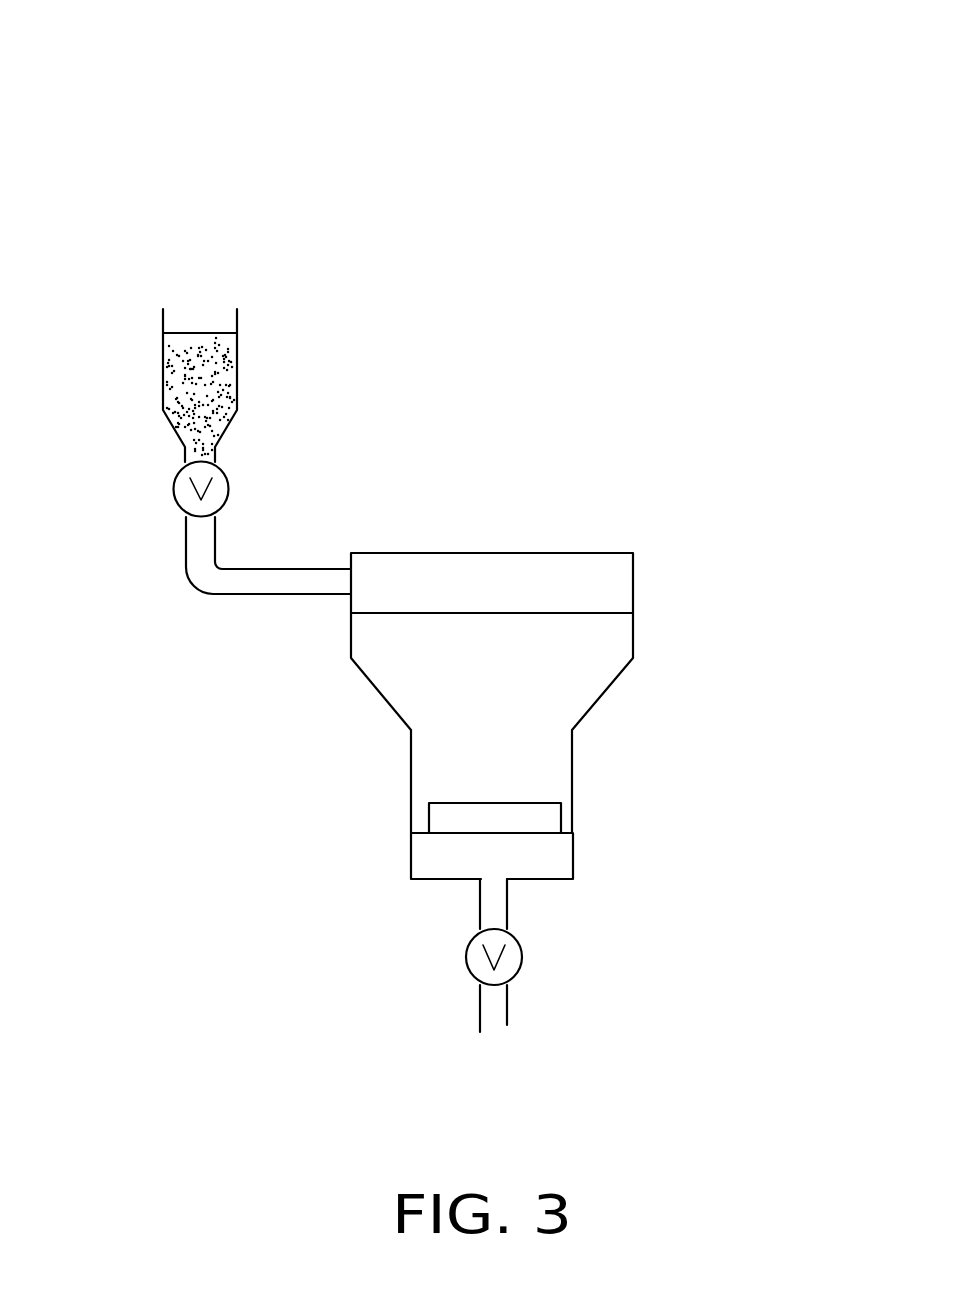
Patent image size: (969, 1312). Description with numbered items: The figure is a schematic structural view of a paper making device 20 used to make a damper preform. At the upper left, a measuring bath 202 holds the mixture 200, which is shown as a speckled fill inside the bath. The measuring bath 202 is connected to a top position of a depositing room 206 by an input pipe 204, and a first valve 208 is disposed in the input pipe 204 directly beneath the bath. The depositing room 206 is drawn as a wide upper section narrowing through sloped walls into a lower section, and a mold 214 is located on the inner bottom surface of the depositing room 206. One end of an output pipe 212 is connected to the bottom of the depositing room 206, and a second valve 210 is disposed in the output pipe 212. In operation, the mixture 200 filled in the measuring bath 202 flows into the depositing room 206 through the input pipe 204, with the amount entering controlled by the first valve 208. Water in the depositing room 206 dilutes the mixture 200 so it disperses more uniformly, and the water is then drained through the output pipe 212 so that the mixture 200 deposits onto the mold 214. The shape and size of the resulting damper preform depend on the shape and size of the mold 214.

The paper making device 20 is at (551, 75).
The mixture 200 is at (237, 322).
The measuring bath 202 is at (205, 380).
The input pipe 204 is at (300, 575).
The depositing room 206 is at (603, 584).
The first valve 208 is at (173, 493).
The second valve 210 is at (520, 968).
The output pipe 212 is at (492, 906).
The mold 214 is at (540, 817).